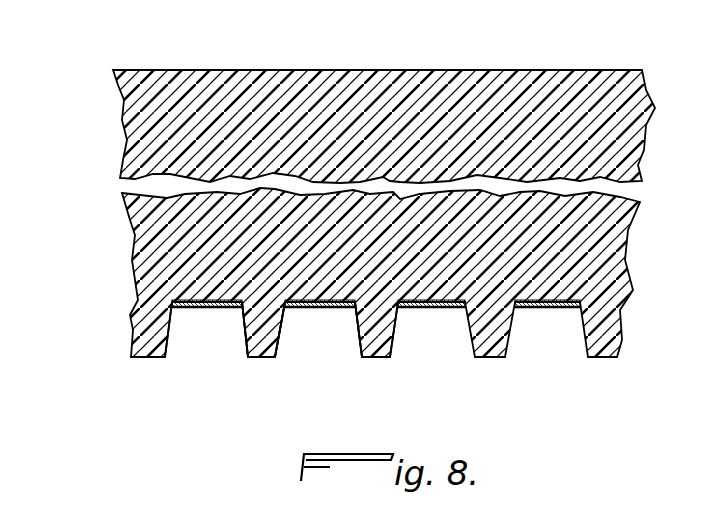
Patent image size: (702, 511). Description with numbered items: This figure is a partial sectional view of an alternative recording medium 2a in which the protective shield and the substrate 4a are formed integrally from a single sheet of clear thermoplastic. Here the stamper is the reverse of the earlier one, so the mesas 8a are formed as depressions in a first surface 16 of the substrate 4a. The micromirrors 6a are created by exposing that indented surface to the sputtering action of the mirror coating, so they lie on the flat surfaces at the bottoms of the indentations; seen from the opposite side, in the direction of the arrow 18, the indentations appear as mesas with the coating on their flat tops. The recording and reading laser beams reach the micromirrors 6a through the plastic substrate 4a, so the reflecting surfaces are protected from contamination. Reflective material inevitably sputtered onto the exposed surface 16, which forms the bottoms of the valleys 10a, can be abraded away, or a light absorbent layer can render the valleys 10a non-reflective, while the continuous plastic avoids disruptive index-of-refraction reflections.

The recording medium 2a is at (338, 295).
The substrate 4a is at (142, 230).
The micromirrors 6a is at (205, 299).
The mesas 8a is at (162, 343).
The valleys 10a is at (262, 299).
The first surface 16 is at (263, 358).
The arrow 18 is at (182, 4).